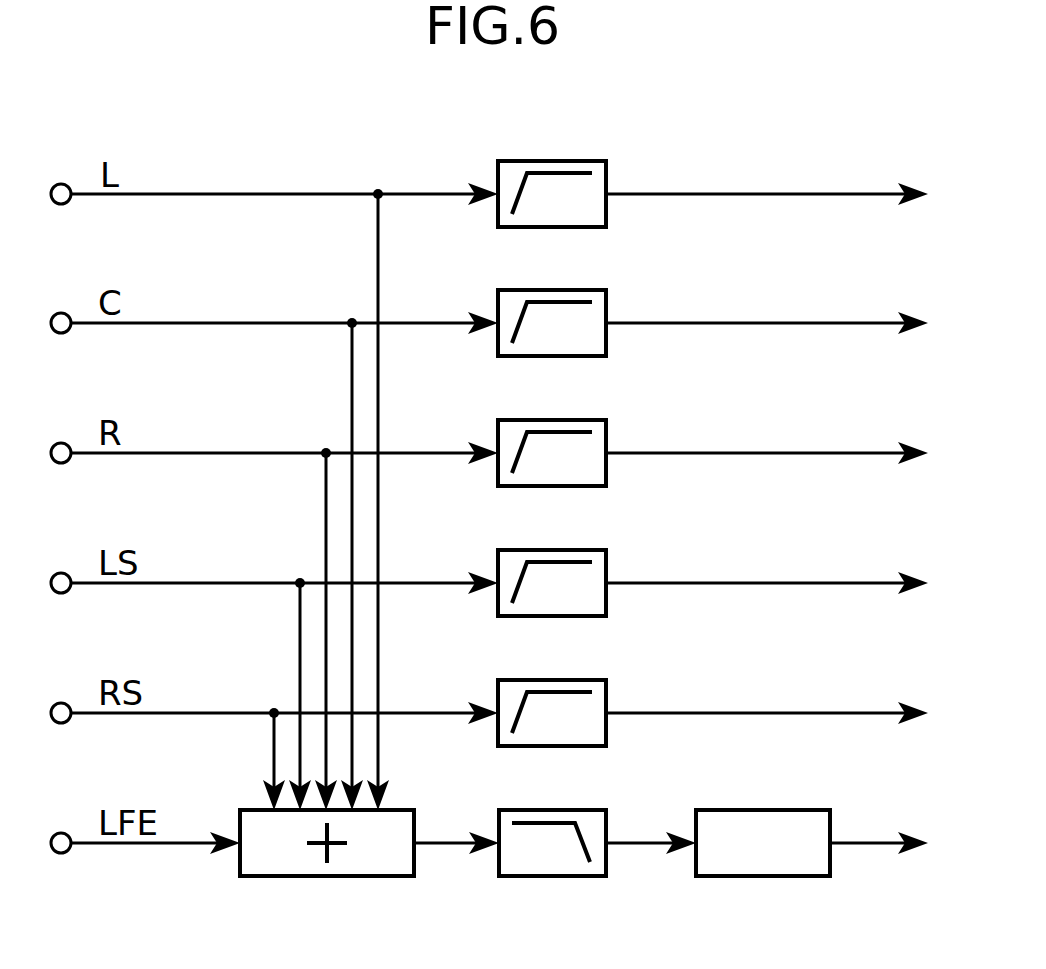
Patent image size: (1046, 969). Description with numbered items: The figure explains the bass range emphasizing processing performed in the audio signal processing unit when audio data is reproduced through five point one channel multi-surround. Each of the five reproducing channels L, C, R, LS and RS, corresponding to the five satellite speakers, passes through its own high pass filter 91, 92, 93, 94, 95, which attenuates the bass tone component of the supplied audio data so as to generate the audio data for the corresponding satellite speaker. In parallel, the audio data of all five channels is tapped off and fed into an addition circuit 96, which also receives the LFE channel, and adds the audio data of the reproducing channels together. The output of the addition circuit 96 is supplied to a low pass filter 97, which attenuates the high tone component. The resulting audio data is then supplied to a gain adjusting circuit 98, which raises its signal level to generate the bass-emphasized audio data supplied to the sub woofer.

The high pass filter 91 is at (552, 161).
The high pass filter 92 is at (552, 290).
The high pass filter 93 is at (552, 420).
The high pass filter 94 is at (552, 550).
The high pass filter 95 is at (552, 680).
The addition circuit 96 is at (323, 877).
The low pass filter 97 is at (552, 810).
The gain adjusting circuit 98 is at (755, 877).